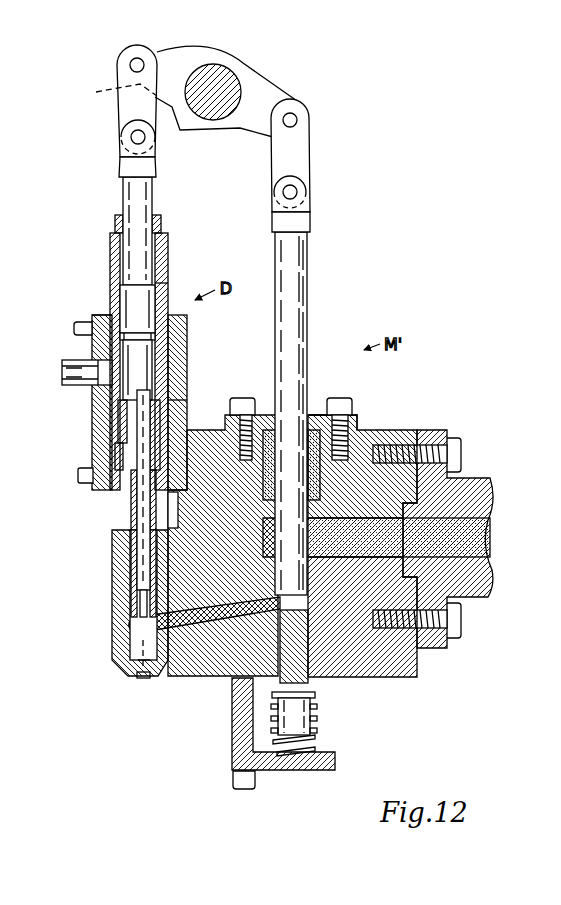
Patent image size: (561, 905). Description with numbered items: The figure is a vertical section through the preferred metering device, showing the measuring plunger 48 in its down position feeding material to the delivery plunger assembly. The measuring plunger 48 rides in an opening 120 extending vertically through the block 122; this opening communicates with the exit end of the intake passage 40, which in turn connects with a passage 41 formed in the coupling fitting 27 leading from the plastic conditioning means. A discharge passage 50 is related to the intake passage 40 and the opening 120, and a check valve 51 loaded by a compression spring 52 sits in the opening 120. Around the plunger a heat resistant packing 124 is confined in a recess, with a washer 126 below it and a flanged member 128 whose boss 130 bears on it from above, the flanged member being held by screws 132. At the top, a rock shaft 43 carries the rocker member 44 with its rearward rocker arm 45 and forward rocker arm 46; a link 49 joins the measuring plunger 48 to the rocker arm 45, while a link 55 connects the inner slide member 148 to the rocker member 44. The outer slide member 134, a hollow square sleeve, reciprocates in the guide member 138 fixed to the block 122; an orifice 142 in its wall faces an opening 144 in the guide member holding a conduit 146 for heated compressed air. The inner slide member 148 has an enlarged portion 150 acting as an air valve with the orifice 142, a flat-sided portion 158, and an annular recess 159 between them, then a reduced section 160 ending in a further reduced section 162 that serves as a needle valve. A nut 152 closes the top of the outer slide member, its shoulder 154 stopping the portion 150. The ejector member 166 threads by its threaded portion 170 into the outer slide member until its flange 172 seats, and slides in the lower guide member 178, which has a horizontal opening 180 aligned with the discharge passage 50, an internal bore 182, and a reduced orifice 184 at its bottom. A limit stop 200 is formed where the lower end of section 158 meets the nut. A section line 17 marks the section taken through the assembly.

The section line 17 is at (153, 180).
The coupling fitting 27 is at (478, 478).
The intake passage 40 is at (372, 517).
The passage 41 is at (492, 500).
The rock shaft 43 is at (217, 118).
The rocker member 44 is at (243, 66).
The rearward rocker arm 45 is at (312, 142).
The forward rocker arm 46 is at (114, 93).
The measuring plunger 48 is at (303, 337).
The link 49 is at (300, 166).
The discharge passage 50 is at (207, 617).
The check valve 51 is at (297, 655).
The compression spring 52 is at (318, 737).
The link 55 is at (121, 117).
The opening 120 is at (314, 438).
The block 122 is at (384, 678).
The packing 124 is at (262, 477).
The washer 126 is at (270, 503).
The flanged member 128 is at (358, 418).
The boss 130 is at (320, 399).
The screws 132 is at (243, 397).
The outer slide member 134 is at (112, 278).
The guide member 138 is at (186, 333).
The orifice 142 is at (94, 410).
The opening 144 is at (97, 358).
The conduit 146 is at (66, 383).
The inner slide member 148 is at (147, 206).
The portion of enlarged diameter 150 is at (127, 300).
The nut 152 is at (116, 224).
The shoulder 154 is at (163, 283).
The portion of length with flat sides 158 is at (147, 370).
The annular recess 159 is at (108, 318).
The section 160 is at (140, 526).
The section of further reduced diameter 162 is at (140, 597).
The delivery plunger or ejector member 166 is at (130, 508).
The externally threaded portion 170 is at (166, 422).
The flanged portion 172 is at (116, 453).
The lower guide member 178 is at (112, 561).
The opening 180 is at (164, 614).
The internal bore 182 is at (127, 642).
The orifice 184 is at (138, 679).
The limit stop 200 is at (188, 396).